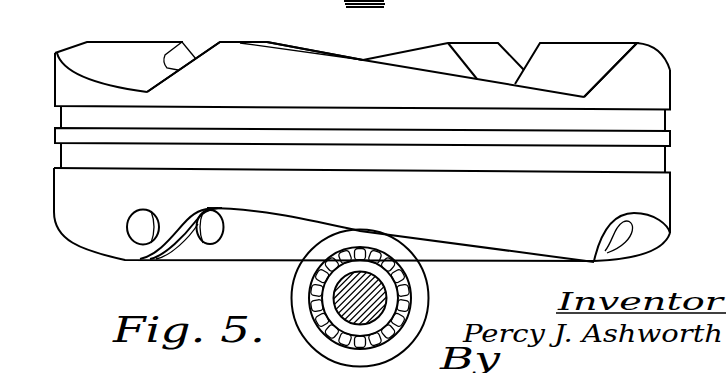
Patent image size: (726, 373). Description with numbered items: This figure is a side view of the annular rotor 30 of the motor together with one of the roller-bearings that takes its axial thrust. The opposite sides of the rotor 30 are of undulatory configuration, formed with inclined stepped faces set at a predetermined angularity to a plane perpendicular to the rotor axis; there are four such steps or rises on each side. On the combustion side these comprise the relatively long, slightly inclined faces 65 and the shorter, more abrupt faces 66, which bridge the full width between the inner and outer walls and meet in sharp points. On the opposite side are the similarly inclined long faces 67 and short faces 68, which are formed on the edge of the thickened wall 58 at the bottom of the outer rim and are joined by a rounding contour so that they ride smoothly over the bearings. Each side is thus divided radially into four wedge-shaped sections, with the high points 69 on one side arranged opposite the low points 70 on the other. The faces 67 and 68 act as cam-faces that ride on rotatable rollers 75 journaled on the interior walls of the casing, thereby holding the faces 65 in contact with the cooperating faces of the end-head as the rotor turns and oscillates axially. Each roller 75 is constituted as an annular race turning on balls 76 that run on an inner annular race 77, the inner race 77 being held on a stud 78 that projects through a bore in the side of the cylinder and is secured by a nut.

The rotor 30 is at (362, 157).
The thickened wall 58 is at (122, 238).
The long inclined faces 65 is at (668, 50).
The short abrupt faces 66 is at (207, 45).
The long cam-faces 67 is at (73, 237).
The short cam-faces 68 is at (183, 236).
The high points 69 is at (143, 42).
The low points 70 is at (148, 93).
The rollers 75 is at (414, 280).
The balls 76 is at (314, 295).
The inner annular races 77 is at (330, 282).
The studs 78 is at (375, 306).